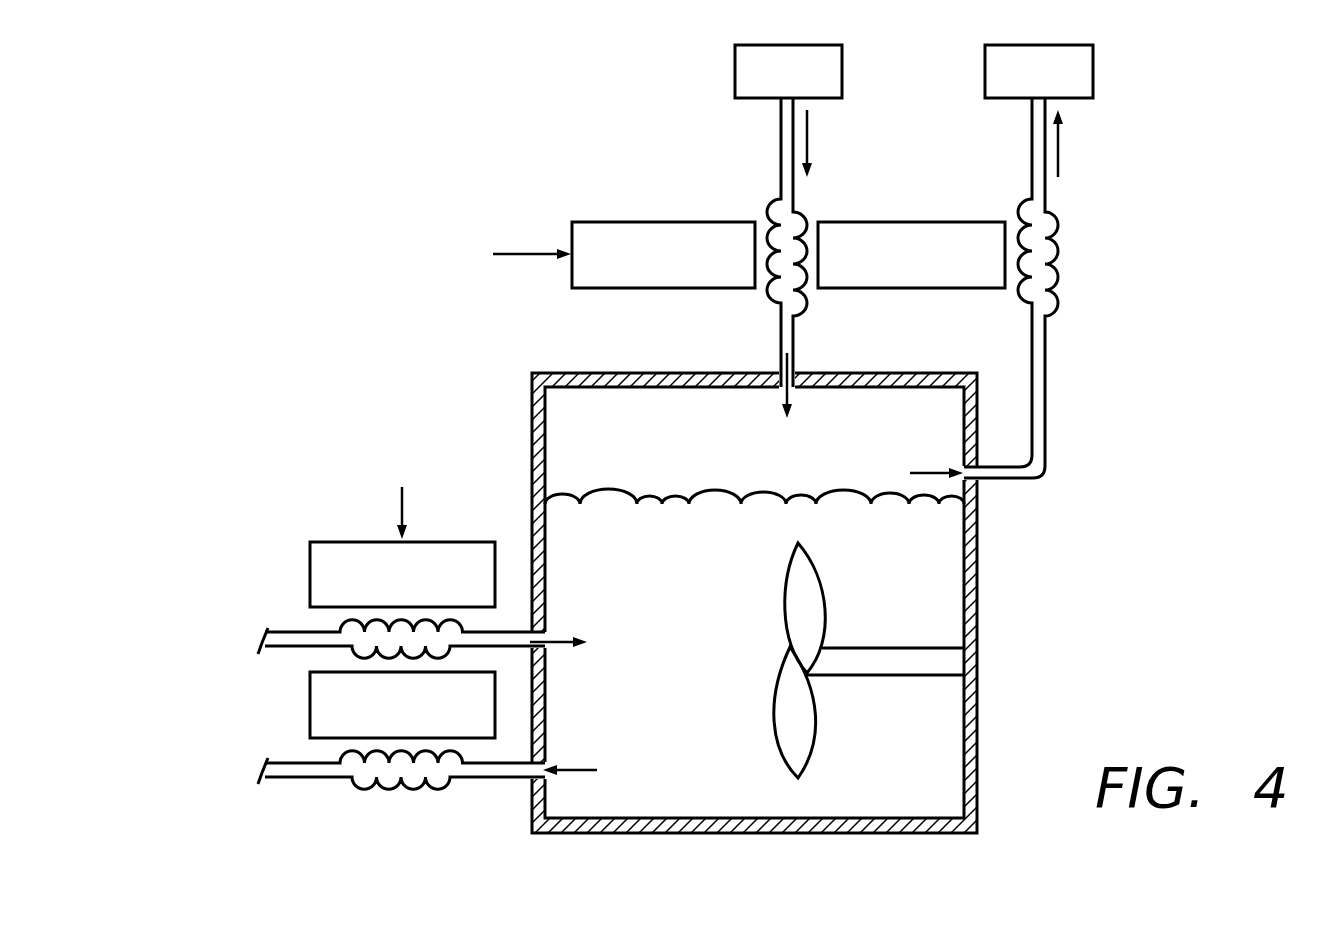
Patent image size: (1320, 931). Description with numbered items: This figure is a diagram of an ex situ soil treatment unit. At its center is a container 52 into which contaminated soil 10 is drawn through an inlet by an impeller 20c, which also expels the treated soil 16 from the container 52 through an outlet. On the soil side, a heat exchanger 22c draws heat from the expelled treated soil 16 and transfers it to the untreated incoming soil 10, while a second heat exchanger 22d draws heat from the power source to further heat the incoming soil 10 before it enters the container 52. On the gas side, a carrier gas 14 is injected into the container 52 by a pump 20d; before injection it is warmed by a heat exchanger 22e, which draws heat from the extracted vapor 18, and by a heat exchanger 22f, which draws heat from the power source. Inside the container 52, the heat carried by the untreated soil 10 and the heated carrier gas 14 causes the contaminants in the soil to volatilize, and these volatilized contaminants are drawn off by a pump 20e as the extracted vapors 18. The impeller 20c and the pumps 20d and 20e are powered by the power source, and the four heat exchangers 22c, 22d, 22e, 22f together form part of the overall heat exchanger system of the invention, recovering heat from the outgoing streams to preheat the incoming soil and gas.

The contaminated soil 10 is at (285, 637).
The carrier gas 14 is at (786, 149).
The treated soil 16 is at (285, 771).
The extracted vapor 18 is at (1036, 149).
The impeller 20c is at (930, 655).
The pump 20d is at (842, 72).
The pump 20e is at (1093, 72).
The heat exchanger 22c is at (309, 704).
The heat exchanger 22d is at (309, 553).
The heat exchanger 22e is at (910, 222).
The heat exchanger 22f is at (621, 222).
The container 52 is at (977, 570).